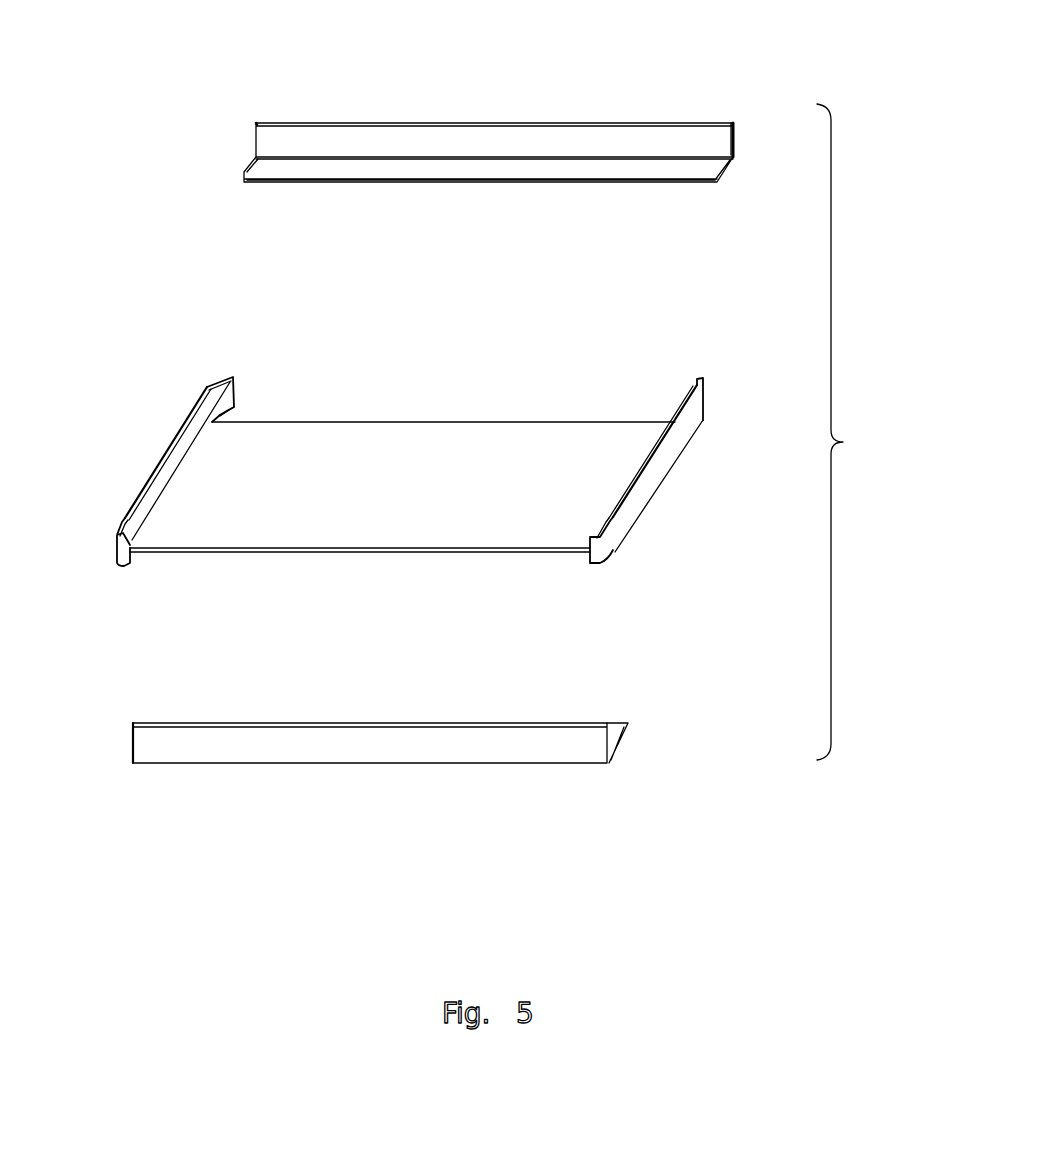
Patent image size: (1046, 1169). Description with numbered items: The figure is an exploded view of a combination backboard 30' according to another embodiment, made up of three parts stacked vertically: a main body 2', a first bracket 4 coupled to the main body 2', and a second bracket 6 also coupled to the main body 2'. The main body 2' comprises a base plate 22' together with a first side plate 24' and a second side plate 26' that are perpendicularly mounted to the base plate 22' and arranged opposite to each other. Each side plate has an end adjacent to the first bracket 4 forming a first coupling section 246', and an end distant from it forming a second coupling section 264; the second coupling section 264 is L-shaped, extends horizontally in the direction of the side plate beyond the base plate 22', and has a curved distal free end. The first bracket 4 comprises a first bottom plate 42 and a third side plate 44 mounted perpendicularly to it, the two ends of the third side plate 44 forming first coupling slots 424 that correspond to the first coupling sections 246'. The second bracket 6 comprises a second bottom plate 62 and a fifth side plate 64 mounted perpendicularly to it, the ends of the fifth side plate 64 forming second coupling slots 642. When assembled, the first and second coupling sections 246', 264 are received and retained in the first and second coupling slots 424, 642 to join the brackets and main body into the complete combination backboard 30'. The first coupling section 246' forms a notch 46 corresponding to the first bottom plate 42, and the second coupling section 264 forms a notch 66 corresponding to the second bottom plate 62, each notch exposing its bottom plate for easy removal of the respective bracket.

The second bracket 6 is at (415, 126).
The fifth side plate 64 is at (597, 143).
The second coupling slots 642 is at (733, 123).
The second bottom plate 62 is at (553, 168).
The main body 2' is at (412, 416).
The base plate 22' is at (402, 440).
The first side plate 24' is at (223, 416).
The second coupling section 264 is at (218, 385).
The notch 66 is at (223, 412).
The first coupling section 246' is at (83, 527).
The second side plate 26' is at (688, 445).
The notch 46 is at (612, 560).
The first bracket 4 is at (402, 740).
The first coupling slots 424 is at (133, 723).
The first bottom plate 42 is at (622, 725).
The third side plate 44 is at (318, 742).
The combination backboard 30' is at (858, 432).